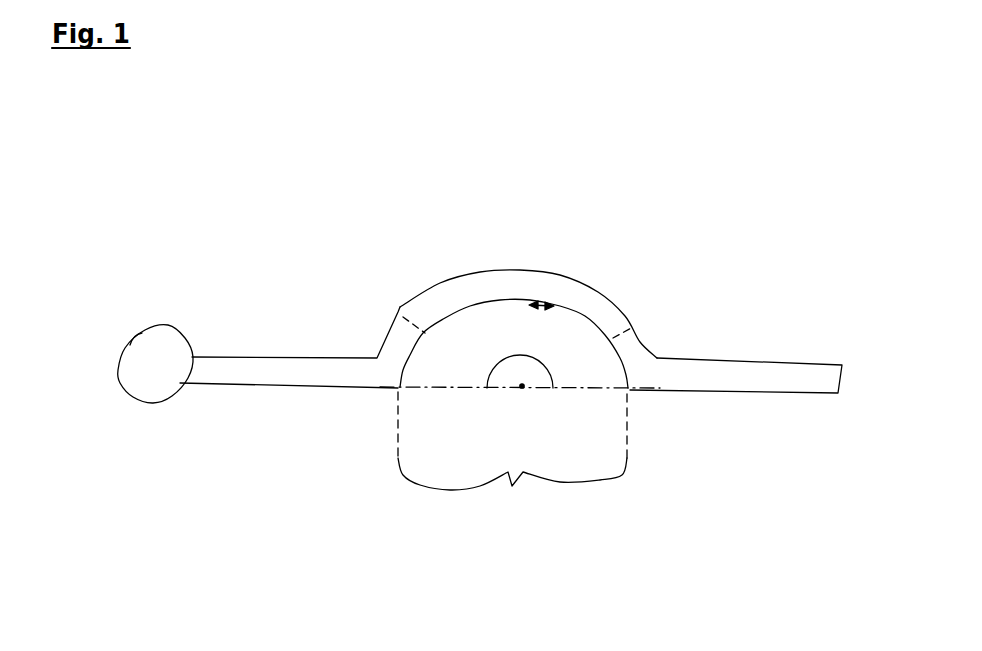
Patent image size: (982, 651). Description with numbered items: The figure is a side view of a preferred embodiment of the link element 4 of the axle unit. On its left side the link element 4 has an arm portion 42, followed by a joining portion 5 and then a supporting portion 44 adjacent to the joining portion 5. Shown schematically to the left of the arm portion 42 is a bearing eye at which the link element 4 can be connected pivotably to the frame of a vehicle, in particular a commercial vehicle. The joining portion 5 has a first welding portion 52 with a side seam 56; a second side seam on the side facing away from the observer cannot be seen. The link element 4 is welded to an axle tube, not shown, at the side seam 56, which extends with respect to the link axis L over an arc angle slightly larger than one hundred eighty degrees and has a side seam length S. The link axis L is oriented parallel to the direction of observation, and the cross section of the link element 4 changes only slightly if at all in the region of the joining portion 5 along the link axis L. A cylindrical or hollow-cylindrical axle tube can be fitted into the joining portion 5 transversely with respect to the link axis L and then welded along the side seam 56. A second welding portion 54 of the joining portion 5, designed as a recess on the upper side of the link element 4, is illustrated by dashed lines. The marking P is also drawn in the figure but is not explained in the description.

The link element 4 is at (632, 77).
The arm portion 42 is at (262, 365).
The supporting portion 44 is at (780, 372).
The joining portion 5 is at (512, 498).
The first welding portion 52 is at (294, 500).
The second welding portion 54 is at (405, 303).
The side seam 56 is at (638, 332).
The bending point P is at (517, 355).
The side seam length S is at (537, 300).
The link axis L is at (522, 386).